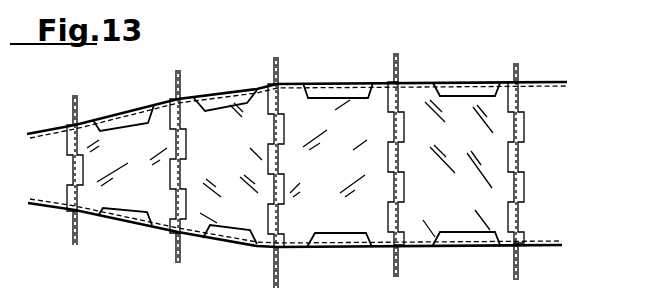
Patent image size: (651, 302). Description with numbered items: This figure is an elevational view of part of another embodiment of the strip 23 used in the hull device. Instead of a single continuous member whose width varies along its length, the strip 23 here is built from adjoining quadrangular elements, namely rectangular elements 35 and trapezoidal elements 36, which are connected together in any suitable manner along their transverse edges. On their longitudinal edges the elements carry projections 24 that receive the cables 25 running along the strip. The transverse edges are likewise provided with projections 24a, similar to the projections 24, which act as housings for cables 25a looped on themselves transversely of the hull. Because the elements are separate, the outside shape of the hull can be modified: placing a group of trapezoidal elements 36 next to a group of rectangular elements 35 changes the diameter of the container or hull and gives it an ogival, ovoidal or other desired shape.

The strip 23 is at (113, 111).
The cable 25 is at (223, 240).
The cable looped transversely 25a is at (276, 64).
The trapezoidal element 36 is at (136, 132).
The rectangular element 35 is at (336, 107).
The projection 24 is at (412, 91).
The transverse projection 24a is at (182, 160).